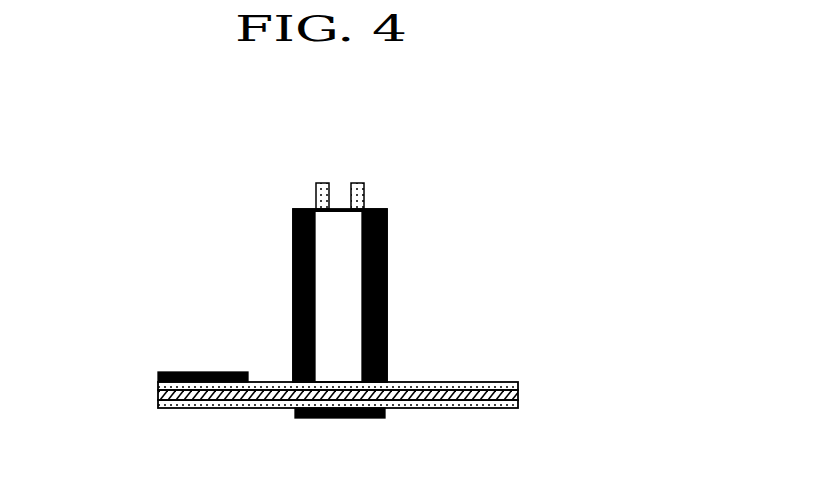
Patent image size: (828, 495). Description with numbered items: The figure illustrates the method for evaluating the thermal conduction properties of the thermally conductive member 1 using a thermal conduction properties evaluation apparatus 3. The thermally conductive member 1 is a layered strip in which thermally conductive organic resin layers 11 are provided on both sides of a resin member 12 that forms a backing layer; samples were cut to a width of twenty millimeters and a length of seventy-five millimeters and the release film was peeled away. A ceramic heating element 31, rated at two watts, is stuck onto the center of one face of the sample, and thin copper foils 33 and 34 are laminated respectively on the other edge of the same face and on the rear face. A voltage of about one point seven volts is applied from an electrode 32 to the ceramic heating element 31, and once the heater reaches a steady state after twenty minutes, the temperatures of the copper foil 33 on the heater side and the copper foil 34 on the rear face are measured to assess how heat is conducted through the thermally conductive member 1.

The thermally conductive member 1 is at (637, 345).
The thermally conductive organic resin layer 11 is at (518, 387).
The resin member 12 is at (518, 392).
The thermal conduction properties evaluation apparatus 3 is at (424, 220).
The ceramic heating element 31 is at (392, 300).
The electrode 32 is at (310, 177).
The copper foil 33 is at (202, 365).
The copper foil 34 is at (322, 428).